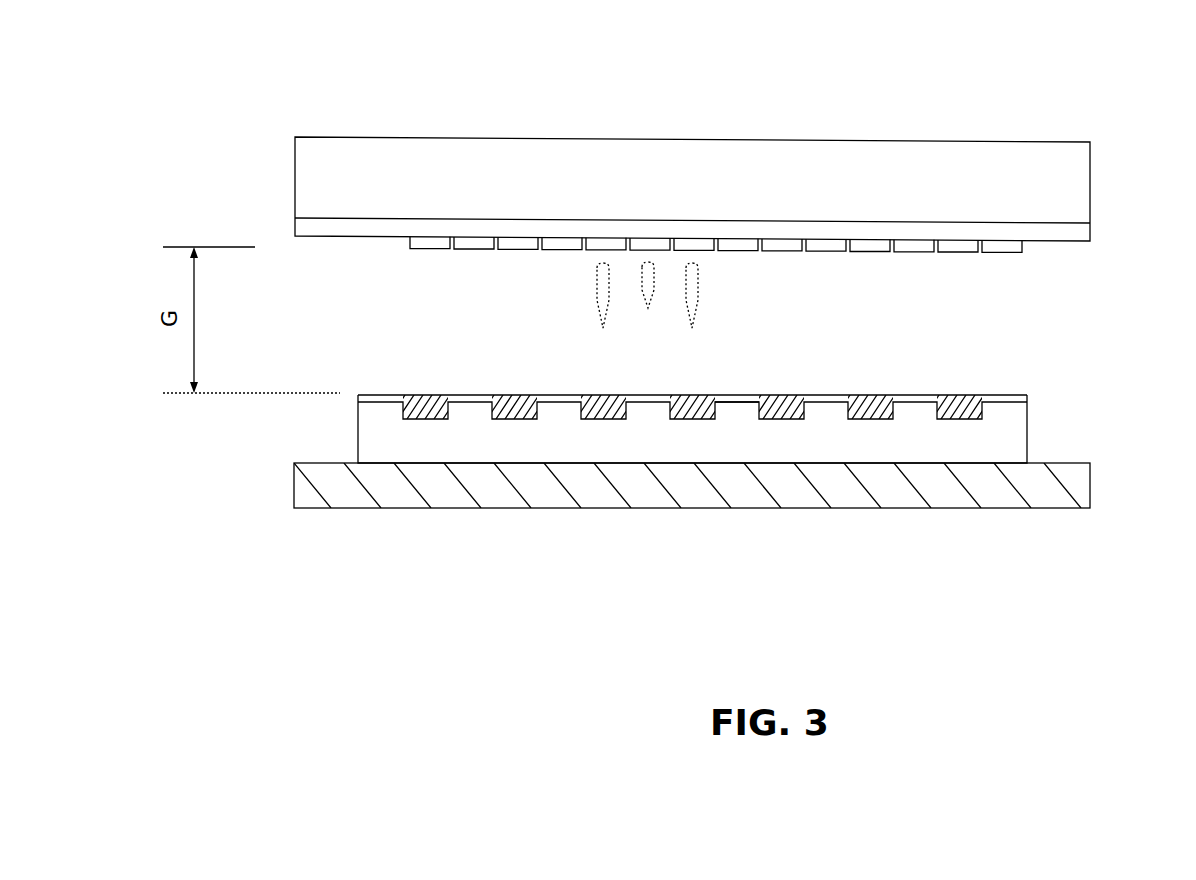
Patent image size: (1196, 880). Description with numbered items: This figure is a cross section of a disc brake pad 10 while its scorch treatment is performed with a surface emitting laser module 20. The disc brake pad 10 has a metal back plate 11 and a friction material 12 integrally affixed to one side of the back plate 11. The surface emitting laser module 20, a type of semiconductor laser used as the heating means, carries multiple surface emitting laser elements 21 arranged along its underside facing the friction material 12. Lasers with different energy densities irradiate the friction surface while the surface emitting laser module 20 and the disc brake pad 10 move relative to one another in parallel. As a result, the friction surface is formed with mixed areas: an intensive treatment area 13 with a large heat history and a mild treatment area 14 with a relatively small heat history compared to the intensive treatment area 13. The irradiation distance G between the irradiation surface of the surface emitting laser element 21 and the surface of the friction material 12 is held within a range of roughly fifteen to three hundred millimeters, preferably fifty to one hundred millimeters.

The disc brake pad 10 is at (1032, 401).
The back plate 11 is at (1092, 483).
The friction material 12 is at (1030, 438).
The intensive treatment area 13 is at (920, 372).
The mild treatment area 14 is at (790, 372).
The surface emitting laser module 20 is at (1040, 141).
The surface emitting laser element 21 is at (955, 253).